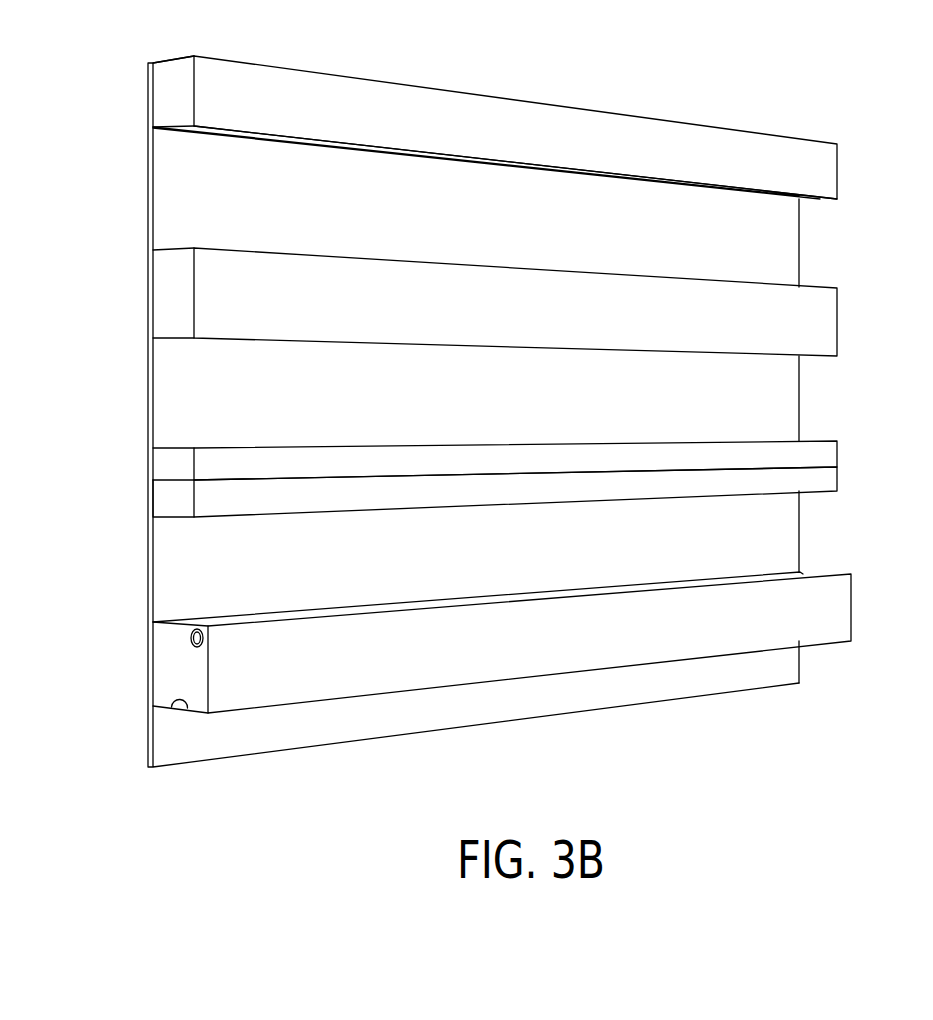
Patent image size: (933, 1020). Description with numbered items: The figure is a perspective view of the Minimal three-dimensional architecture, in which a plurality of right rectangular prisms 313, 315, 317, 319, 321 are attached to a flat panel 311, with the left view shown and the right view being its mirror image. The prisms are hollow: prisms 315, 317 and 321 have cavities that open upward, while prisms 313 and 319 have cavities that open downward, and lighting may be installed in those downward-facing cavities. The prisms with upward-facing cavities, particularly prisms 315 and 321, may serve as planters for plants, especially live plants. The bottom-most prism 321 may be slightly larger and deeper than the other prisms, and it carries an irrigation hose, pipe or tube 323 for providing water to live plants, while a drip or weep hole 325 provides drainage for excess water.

The flat panel 311 is at (205, 187).
The right rectangular prism 313 is at (760, 153).
The right rectangular prism 315 is at (813, 329).
The right rectangular prism 317 is at (813, 454).
The right rectangular prism 319 is at (825, 478).
The right rectangular prism 321 is at (836, 605).
The irrigation hose, pipe or tube 323 is at (190, 645).
The drip or weep hole 325 is at (178, 707).